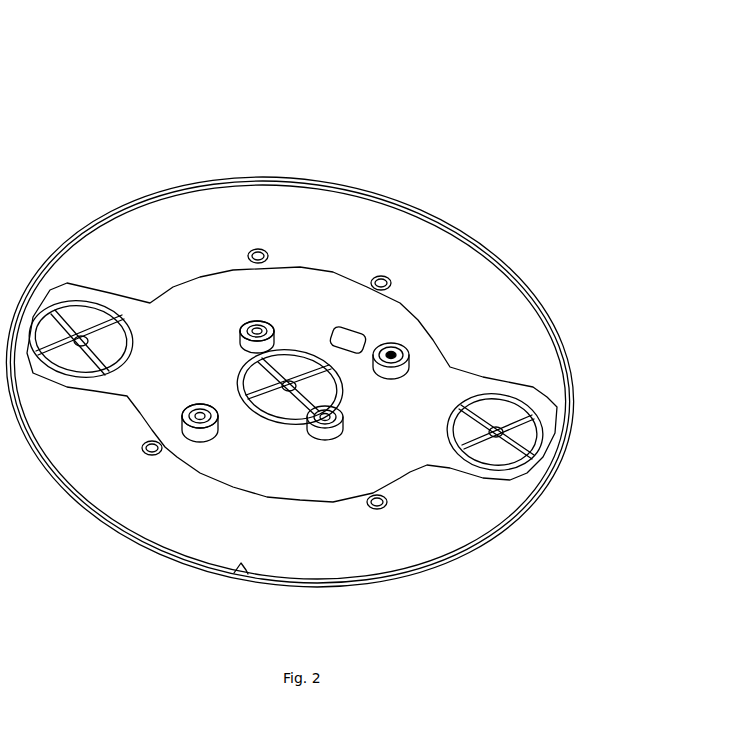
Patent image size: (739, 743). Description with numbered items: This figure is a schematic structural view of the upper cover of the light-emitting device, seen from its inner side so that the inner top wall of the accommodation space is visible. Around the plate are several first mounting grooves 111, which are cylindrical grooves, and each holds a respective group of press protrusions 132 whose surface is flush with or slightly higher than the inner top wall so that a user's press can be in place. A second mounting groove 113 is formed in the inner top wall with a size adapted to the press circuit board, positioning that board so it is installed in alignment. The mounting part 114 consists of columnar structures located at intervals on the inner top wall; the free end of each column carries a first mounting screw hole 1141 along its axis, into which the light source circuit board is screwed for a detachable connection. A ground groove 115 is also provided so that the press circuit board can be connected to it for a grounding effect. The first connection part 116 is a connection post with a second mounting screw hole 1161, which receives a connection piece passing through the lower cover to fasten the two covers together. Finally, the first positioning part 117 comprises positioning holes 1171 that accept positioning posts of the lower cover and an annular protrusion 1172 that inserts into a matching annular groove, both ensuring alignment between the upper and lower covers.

The first mounting groove 111 is at (564, 391).
The second mounting groove 113 is at (460, 382).
The mounting part 114 is at (253, 323).
The first mounting screw hole 1141 is at (240, 327).
The ground groove 115 is at (350, 342).
The first connection part 116 is at (203, 412).
The second mounting screw hole 1161 is at (198, 423).
The first positioning part 117 is at (348, 162).
The positioning hole 1171 is at (264, 251).
The annular protrusion 1172 is at (396, 197).
The press protrusions 132 is at (528, 440).